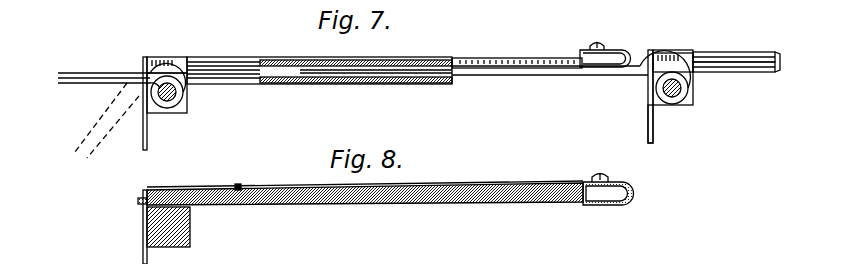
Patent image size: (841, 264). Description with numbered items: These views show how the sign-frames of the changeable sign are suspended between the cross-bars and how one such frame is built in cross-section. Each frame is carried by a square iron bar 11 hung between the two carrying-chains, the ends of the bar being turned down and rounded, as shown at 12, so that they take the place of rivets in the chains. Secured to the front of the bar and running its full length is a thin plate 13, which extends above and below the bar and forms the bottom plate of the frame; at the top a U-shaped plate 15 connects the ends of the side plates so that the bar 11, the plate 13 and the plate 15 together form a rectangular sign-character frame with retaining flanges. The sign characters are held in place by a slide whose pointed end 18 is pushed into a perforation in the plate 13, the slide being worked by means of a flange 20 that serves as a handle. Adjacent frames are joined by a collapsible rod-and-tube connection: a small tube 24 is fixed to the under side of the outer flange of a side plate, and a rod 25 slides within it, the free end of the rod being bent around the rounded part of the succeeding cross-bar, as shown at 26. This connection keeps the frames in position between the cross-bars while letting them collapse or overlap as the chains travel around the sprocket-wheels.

In FIG. 7, the square iron bar 11 is at (187, 108).
In FIG. 8, the square iron bar 11 is at (183, 229).
In FIG. 7, the turned-down rounded end of bar 12 is at (167, 101).
In FIG. 7, the thin plate 13 is at (650, 108).
In FIG. 8, the thin plate 13 is at (137, 227).
In FIG. 7, the U-shaped plate 15 is at (628, 53).
In FIG. 8, the U-shaped plate 15 is at (632, 188).
In FIG. 8, the pointed end of slide 18 is at (142, 204).
In FIG. 8, the flange 20 is at (240, 184).
In FIG. 7, the small tube 24 is at (258, 78).
In FIG. 7, the rod 25 is at (585, 75).
In FIG. 7, the bent end of rod 26 is at (172, 72).